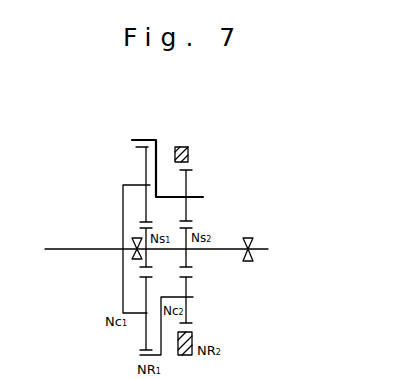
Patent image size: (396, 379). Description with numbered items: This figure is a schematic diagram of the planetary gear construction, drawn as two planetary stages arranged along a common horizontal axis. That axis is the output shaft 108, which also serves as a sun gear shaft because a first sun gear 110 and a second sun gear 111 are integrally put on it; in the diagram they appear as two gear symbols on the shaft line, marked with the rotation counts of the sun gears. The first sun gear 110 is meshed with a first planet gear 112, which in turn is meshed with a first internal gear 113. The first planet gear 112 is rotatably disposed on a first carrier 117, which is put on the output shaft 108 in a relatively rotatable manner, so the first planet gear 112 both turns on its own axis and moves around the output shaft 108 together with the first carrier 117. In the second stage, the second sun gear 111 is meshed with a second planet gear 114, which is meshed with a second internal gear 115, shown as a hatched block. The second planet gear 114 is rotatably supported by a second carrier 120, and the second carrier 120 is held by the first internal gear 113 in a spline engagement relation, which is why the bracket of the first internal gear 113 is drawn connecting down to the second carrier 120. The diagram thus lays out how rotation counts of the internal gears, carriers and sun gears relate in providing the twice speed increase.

The output shaft 108 is at (227, 249).
The first sun gear 110 is at (141, 266).
The second sun gear 111 is at (190, 266).
The first planet gear 112 is at (142, 157).
The first internal gear 113 is at (137, 139).
The second planet gear 114 is at (190, 211).
The second internal gear 115 is at (188, 151).
The first carrier 117 is at (123, 203).
The second carrier 120 is at (188, 181).